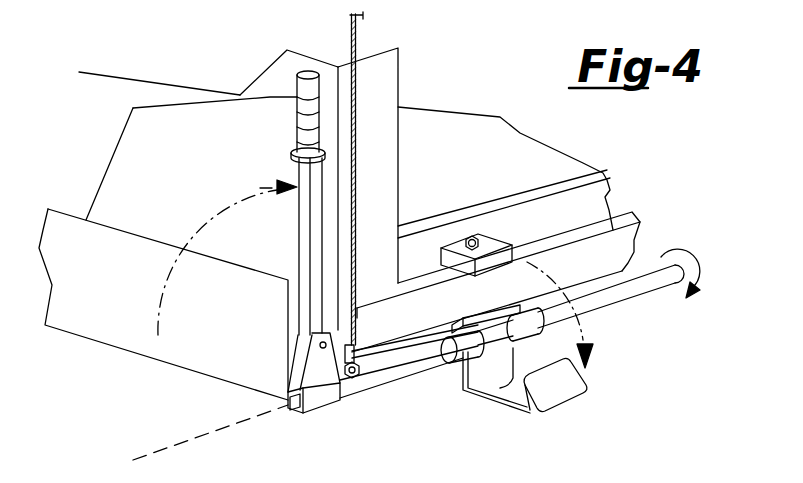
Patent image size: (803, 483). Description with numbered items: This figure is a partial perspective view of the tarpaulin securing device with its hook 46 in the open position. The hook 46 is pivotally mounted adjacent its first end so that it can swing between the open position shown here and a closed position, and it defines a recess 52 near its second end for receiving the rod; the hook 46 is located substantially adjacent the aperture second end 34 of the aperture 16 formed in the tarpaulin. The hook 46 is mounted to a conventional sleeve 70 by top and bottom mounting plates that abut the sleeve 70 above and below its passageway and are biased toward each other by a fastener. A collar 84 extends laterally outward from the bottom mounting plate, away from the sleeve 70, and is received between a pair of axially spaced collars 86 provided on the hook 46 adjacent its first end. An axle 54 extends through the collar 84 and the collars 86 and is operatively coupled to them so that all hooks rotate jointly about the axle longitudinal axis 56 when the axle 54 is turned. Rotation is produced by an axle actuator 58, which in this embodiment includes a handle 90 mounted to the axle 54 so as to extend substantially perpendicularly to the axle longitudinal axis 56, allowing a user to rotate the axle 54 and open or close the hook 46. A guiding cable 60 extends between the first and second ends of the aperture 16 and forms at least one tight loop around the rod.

The aperture 16 is at (399, 232).
The aperture second end 34 is at (538, 240).
The hook 46 is at (473, 398).
The recess 52 is at (517, 393).
The axle 54 is at (630, 290).
The axle longitudinal axis 56 is at (152, 452).
The axle actuator 58 is at (299, 240).
The guiding cable 60 is at (357, 45).
The sleeve 70 is at (450, 262).
The collar 84 is at (467, 323).
The collars 86 is at (527, 320).
The handle 90 is at (297, 125).